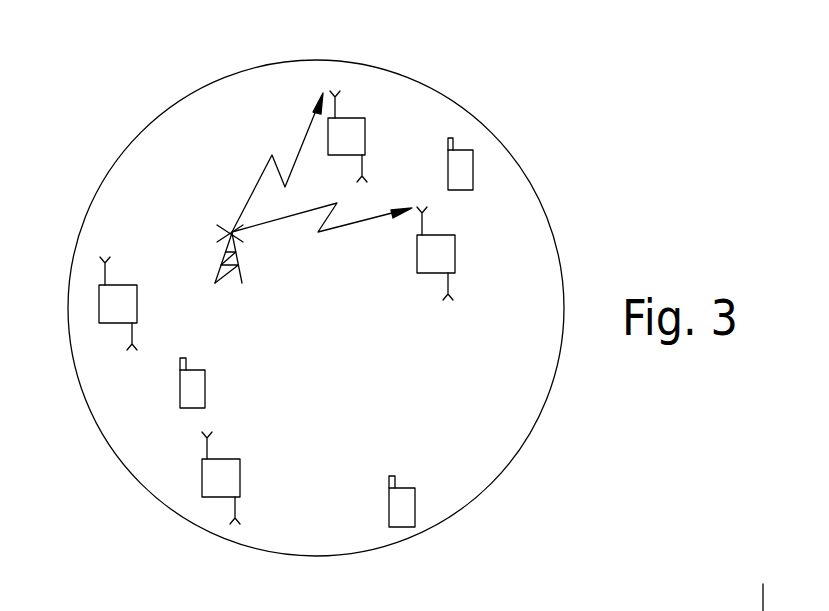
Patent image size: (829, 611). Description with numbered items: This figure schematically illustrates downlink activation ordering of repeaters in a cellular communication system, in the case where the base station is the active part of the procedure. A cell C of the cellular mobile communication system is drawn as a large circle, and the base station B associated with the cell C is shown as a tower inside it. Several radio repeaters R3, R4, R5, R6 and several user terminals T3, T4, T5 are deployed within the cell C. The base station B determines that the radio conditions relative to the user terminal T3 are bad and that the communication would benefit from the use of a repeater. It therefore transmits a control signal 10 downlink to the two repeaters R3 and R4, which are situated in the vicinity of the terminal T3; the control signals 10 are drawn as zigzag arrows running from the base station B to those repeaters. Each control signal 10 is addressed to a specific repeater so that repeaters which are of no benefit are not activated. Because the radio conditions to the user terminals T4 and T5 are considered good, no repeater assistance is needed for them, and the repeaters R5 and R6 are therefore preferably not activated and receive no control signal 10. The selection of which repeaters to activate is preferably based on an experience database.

The cell C is at (156, 147).
The base station B is at (232, 227).
The control signal 10 is at (297, 152).
The repeater R3 is at (352, 136).
The repeater R4 is at (442, 252).
The repeater R5 is at (227, 477).
The repeater R6 is at (103, 308).
The user terminal T3 is at (470, 153).
The user terminal T4 is at (412, 500).
The user terminal T5 is at (195, 397).